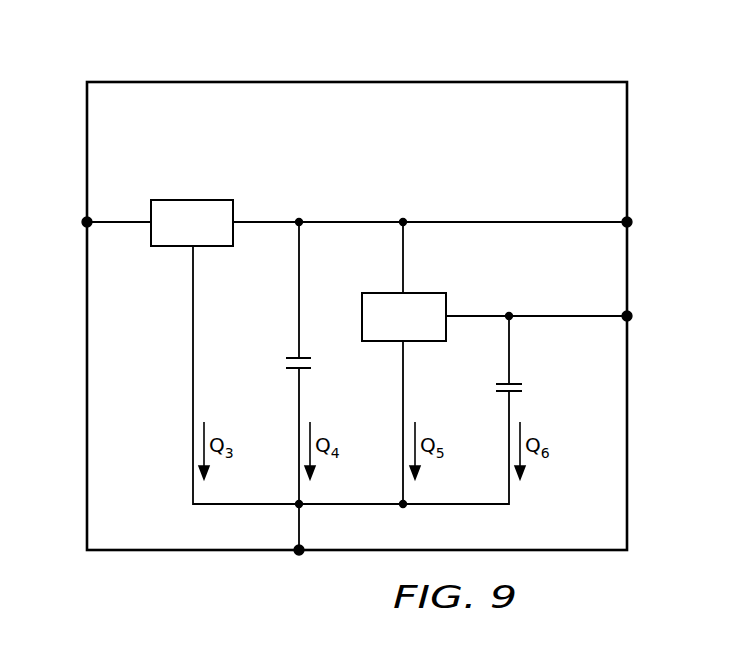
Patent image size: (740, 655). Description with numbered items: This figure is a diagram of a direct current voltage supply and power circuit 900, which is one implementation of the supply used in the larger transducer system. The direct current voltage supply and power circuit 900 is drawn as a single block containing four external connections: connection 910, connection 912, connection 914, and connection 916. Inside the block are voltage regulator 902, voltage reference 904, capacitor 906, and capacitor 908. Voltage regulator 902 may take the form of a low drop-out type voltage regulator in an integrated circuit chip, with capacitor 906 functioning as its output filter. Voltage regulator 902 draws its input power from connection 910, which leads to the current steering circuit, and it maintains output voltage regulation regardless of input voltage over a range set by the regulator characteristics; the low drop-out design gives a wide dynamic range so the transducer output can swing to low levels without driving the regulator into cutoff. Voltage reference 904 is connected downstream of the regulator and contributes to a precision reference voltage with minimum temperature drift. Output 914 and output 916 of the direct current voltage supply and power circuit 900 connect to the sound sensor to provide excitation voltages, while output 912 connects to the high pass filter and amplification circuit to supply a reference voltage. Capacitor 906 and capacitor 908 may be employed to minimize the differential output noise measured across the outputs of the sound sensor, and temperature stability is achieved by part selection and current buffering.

The direct current voltage supply and power circuit 900 is at (381, 78).
The voltage regulator 902 is at (188, 200).
The voltage reference 904 is at (424, 293).
The capacitor 906 is at (286, 362).
The capacitor 908 is at (525, 388).
The connection 910 is at (83, 219).
The connection 912 is at (632, 219).
The connection 914 is at (632, 320).
The connection 916 is at (297, 556).